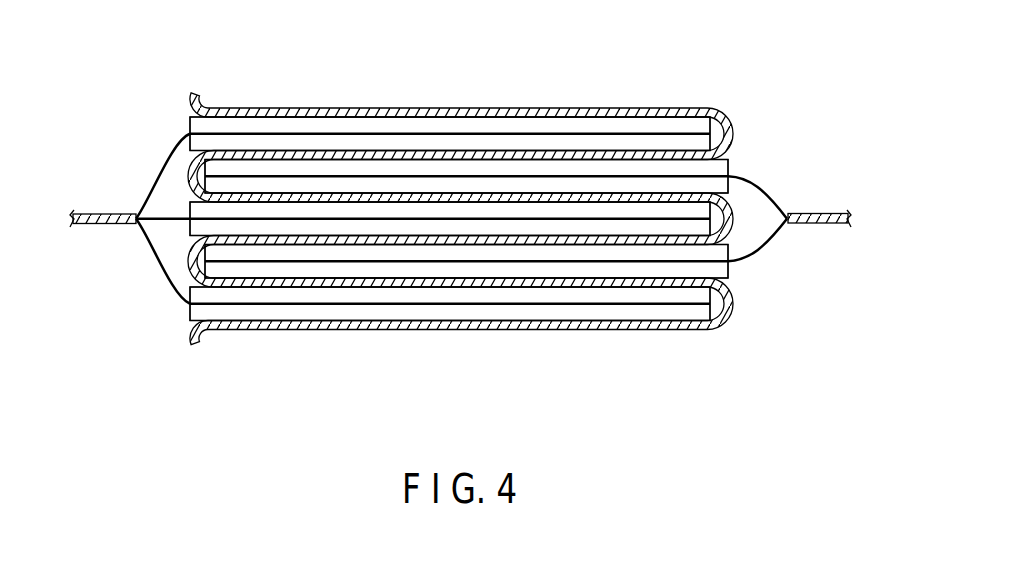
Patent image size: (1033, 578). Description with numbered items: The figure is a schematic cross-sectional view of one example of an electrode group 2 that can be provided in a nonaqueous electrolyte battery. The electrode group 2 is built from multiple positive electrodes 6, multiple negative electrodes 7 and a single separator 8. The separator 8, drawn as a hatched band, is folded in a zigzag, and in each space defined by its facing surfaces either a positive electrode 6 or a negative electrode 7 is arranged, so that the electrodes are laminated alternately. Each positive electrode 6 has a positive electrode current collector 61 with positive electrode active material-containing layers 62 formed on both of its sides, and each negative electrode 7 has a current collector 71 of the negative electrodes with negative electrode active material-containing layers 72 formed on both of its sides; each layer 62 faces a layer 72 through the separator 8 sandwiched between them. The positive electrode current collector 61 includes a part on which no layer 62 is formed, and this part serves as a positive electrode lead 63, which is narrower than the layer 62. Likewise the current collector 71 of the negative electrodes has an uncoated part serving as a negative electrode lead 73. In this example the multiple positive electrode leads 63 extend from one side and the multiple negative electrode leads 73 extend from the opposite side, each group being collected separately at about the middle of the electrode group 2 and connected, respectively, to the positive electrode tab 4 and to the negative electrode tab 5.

The electrode group 2 is at (769, 79).
The positive electrode tab 4 is at (828, 224).
The negative electrode tab 5 is at (90, 224).
The positive electrode 6 is at (592, 44).
The positive electrode current collector 61 is at (610, 175).
The positive electrode active material-containing layer 62 is at (671, 190).
The positive electrode lead 63 is at (758, 250).
The negative electrode 7 is at (283, 44).
The current collector of negative electrodes 71 is at (303, 132).
The negative electrode active material-containing layer 72 is at (368, 145).
The negative electrode lead 73 is at (172, 216).
The separator 8 is at (203, 103).